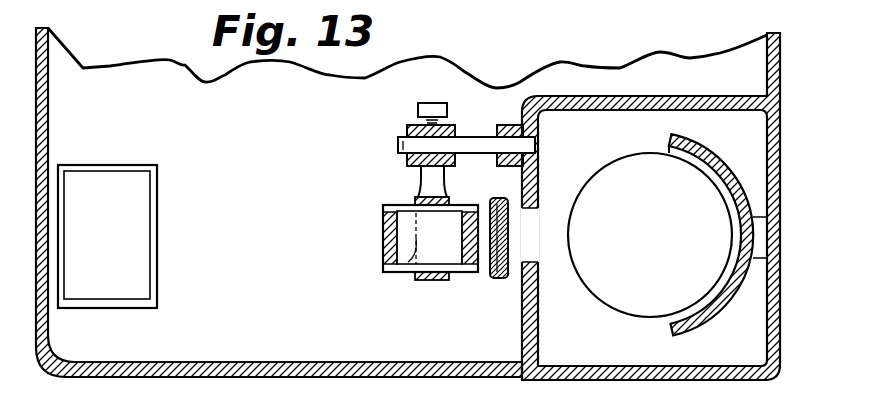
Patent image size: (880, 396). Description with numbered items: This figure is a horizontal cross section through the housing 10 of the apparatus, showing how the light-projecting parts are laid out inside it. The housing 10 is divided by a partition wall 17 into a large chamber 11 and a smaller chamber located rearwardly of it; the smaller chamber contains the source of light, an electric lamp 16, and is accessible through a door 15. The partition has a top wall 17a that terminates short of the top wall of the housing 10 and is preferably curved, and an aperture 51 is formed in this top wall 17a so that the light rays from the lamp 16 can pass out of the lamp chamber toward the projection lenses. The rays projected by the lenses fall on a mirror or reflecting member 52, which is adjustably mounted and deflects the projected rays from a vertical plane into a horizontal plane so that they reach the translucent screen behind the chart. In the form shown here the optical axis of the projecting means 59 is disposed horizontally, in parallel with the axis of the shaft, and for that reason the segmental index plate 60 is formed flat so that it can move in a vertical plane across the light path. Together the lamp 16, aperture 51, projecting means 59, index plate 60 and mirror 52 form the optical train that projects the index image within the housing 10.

The housing 10 is at (487, 79).
The chamber 11 is at (112, 88).
The top wall 17a is at (621, 101).
The partition wall 17 is at (466, 134).
The aperture 51 is at (533, 222).
The mirror or reflecting member 52 is at (123, 258).
The projecting means 59 is at (388, 272).
The segmental index plate 60 is at (490, 258).
The electric lamp 16 is at (650, 235).
The door 15 is at (586, 372).